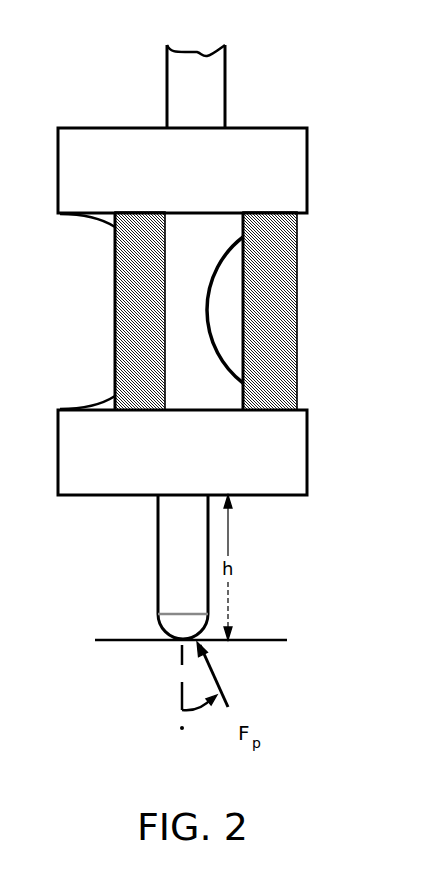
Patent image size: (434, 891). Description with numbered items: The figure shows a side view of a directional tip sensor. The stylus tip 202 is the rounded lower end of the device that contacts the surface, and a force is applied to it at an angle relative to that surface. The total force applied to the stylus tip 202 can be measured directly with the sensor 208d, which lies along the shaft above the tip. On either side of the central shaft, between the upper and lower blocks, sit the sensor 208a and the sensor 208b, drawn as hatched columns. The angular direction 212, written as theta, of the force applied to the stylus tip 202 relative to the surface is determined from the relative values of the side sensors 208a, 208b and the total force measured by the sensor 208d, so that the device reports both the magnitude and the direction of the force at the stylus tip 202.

The stylus tip 202 is at (150, 564).
The sensor 208a is at (133, 288).
The sensor 208b is at (258, 318).
The sensor 208d is at (183, 570).
The angular direction 212 is at (218, 737).